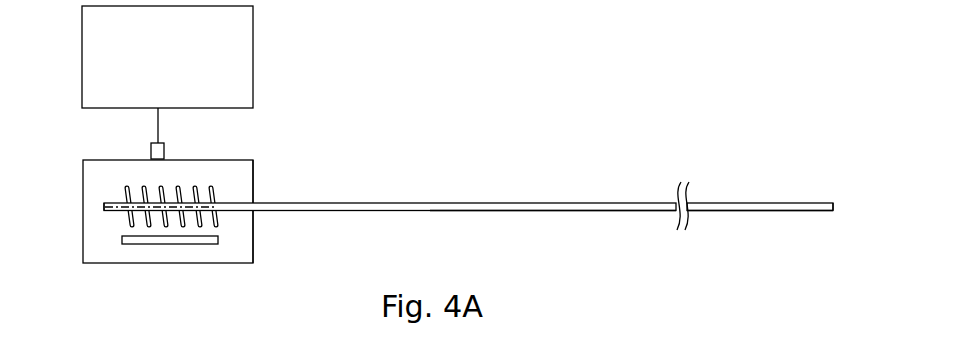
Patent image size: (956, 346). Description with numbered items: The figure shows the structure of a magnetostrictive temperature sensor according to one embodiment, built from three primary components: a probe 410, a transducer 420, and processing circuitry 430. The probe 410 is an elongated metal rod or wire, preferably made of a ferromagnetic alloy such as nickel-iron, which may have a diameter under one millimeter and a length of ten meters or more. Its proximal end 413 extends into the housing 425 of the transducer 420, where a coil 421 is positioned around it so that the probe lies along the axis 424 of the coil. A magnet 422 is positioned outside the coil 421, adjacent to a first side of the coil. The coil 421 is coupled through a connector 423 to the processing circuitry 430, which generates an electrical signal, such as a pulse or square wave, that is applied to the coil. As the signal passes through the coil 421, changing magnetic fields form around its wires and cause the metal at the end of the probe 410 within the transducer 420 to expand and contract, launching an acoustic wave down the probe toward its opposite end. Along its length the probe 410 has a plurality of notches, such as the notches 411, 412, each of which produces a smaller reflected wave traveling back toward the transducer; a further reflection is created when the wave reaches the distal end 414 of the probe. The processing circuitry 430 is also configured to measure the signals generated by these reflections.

The probe 410 is at (427, 203).
The notch 411 is at (563, 211).
The notch 412 is at (768, 211).
The proximal end 413 is at (104, 207).
The distal end 414 is at (838, 203).
The transducer 420 is at (258, 160).
The coil 421 is at (124, 189).
The magnet 422 is at (155, 244).
The connector 423 is at (150, 153).
The axis 424 is at (215, 209).
The housing 425 is at (253, 181).
The processing circuitry 430 is at (253, 57).